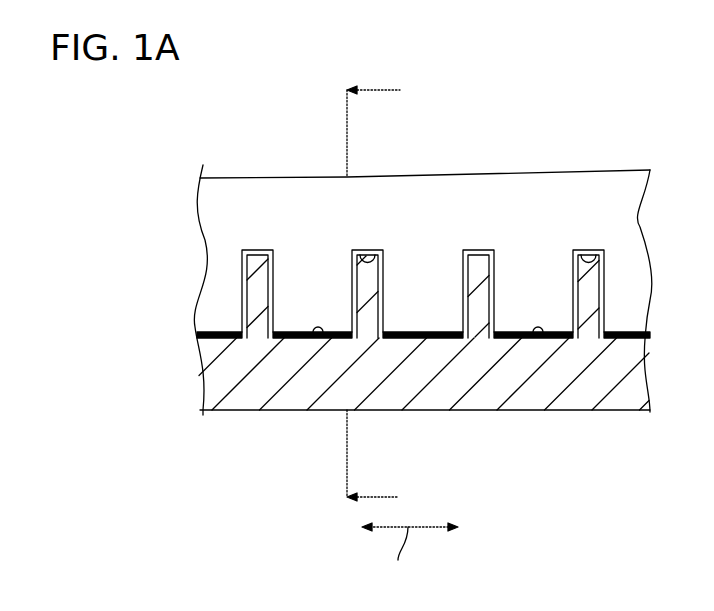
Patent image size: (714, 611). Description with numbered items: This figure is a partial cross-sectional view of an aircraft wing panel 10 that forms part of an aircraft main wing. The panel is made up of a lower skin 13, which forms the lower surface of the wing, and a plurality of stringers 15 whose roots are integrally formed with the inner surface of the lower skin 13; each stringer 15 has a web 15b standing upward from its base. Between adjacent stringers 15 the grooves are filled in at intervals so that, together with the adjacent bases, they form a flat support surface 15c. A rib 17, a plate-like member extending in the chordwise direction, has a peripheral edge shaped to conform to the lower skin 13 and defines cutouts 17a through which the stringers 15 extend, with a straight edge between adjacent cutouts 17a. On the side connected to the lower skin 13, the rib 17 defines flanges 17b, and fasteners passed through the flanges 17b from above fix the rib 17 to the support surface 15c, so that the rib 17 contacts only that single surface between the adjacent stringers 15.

The aircraft wing panel 10 is at (546, 160).
The lower skin 13 is at (380, 410).
The stringer 15 is at (274, 263).
The web 15b is at (494, 265).
The support surface 15c is at (318, 327).
The rib 17 is at (400, 176).
The cutout 17a is at (360, 250).
The flange 17b is at (208, 332).